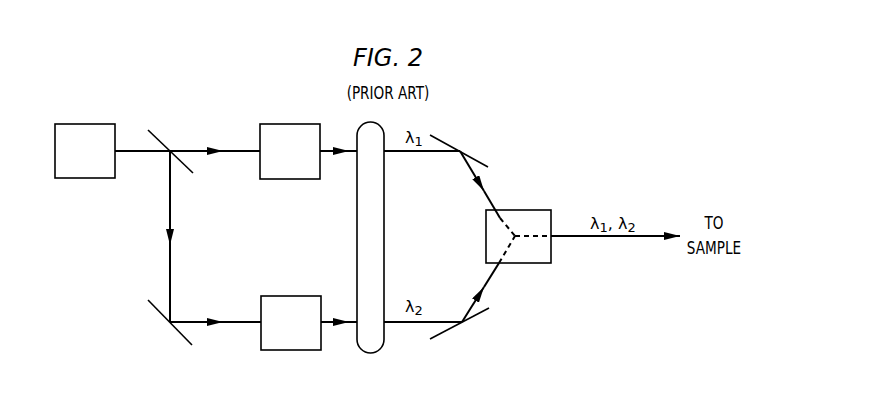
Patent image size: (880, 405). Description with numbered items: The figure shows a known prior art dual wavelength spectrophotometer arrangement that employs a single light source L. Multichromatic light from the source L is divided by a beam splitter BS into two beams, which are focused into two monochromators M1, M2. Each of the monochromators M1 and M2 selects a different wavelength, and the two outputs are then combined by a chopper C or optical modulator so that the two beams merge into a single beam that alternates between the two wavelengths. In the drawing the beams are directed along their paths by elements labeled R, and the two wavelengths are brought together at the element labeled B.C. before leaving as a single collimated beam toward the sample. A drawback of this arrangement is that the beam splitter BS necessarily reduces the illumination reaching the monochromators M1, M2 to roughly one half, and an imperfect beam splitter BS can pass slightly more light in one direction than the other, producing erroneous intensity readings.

The light source L is at (85, 151).
The beam splitter BS is at (170, 145).
The first monochromator M1 is at (290, 151).
The second monochromator M2 is at (291, 323).
The chopper C is at (370, 237).
The reflector mirror R is at (318, 241).
The beam combiner B.C. is at (518, 236).